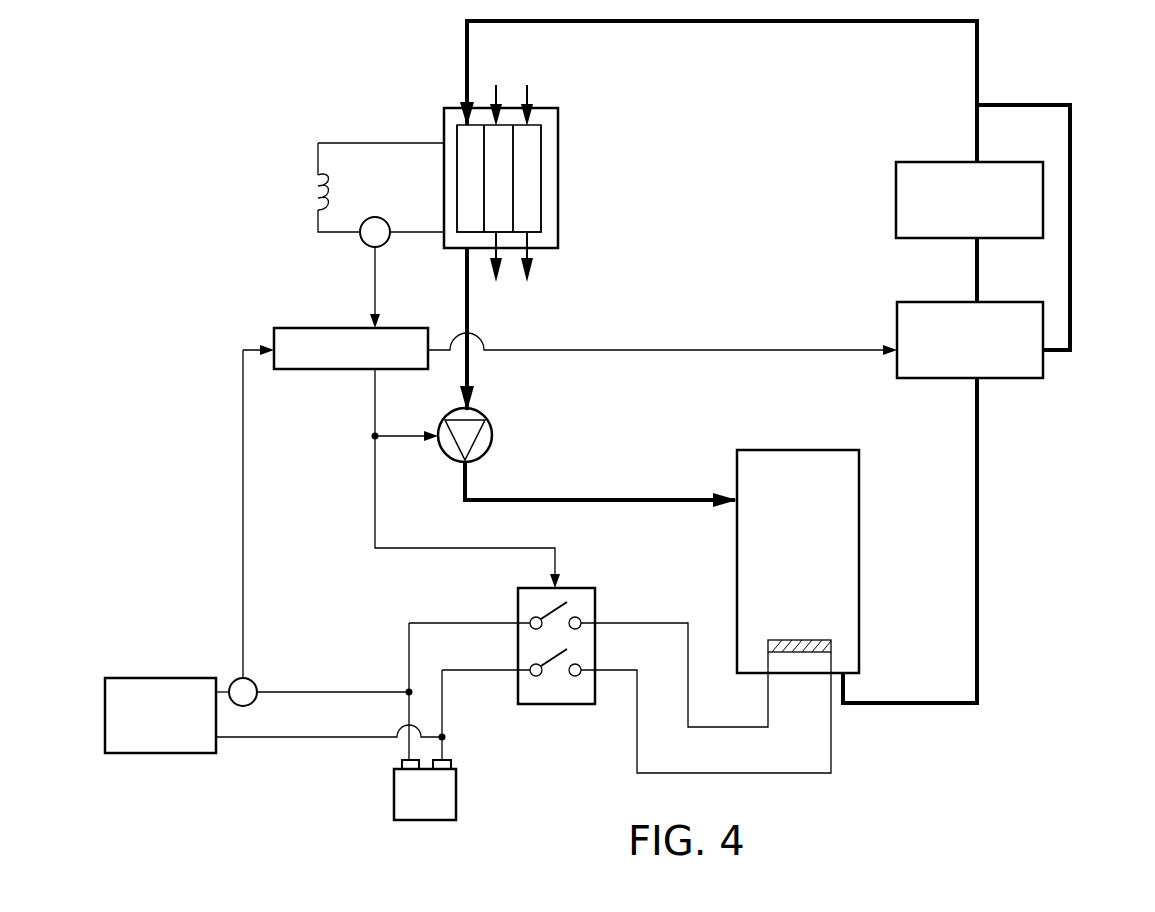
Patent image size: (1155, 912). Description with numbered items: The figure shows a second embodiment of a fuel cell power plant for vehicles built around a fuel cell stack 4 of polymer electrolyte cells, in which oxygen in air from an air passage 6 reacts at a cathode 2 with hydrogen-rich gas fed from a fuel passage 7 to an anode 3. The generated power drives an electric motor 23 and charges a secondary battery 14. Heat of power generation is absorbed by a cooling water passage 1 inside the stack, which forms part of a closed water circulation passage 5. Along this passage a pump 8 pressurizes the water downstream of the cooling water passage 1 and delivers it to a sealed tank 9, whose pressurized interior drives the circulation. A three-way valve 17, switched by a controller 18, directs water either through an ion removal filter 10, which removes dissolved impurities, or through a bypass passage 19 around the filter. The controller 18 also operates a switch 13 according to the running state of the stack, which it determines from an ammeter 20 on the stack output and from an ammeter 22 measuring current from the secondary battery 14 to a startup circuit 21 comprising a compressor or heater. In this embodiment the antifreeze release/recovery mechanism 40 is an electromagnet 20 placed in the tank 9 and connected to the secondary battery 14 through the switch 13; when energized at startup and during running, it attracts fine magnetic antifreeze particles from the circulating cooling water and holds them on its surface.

The cooling water passage 1 is at (465, 172).
The cathode 2 is at (500, 150).
The anode 3 is at (535, 212).
The fuel cell stack 4 is at (558, 183).
The water circulation passage 5 is at (980, 48).
The air passage 6 is at (495, 167).
The fuel passage 7 is at (527, 167).
The pump 8 is at (492, 432).
The tank 9 is at (834, 450).
The ion removal filter 10 is at (918, 162).
The switch 13 is at (596, 605).
The secondary battery 14 is at (458, 784).
The three-way valve 17 is at (897, 322).
The controller 18 is at (400, 328).
The bypass passage 19 is at (1072, 135).
The electromagnet / ammeter 20 is at (362, 245).
The startup circuit 21 is at (155, 678).
The ammeter 22 is at (258, 680).
The electric motor 23 is at (305, 197).
The antifreeze release/recovery mechanism 40 is at (874, 731).